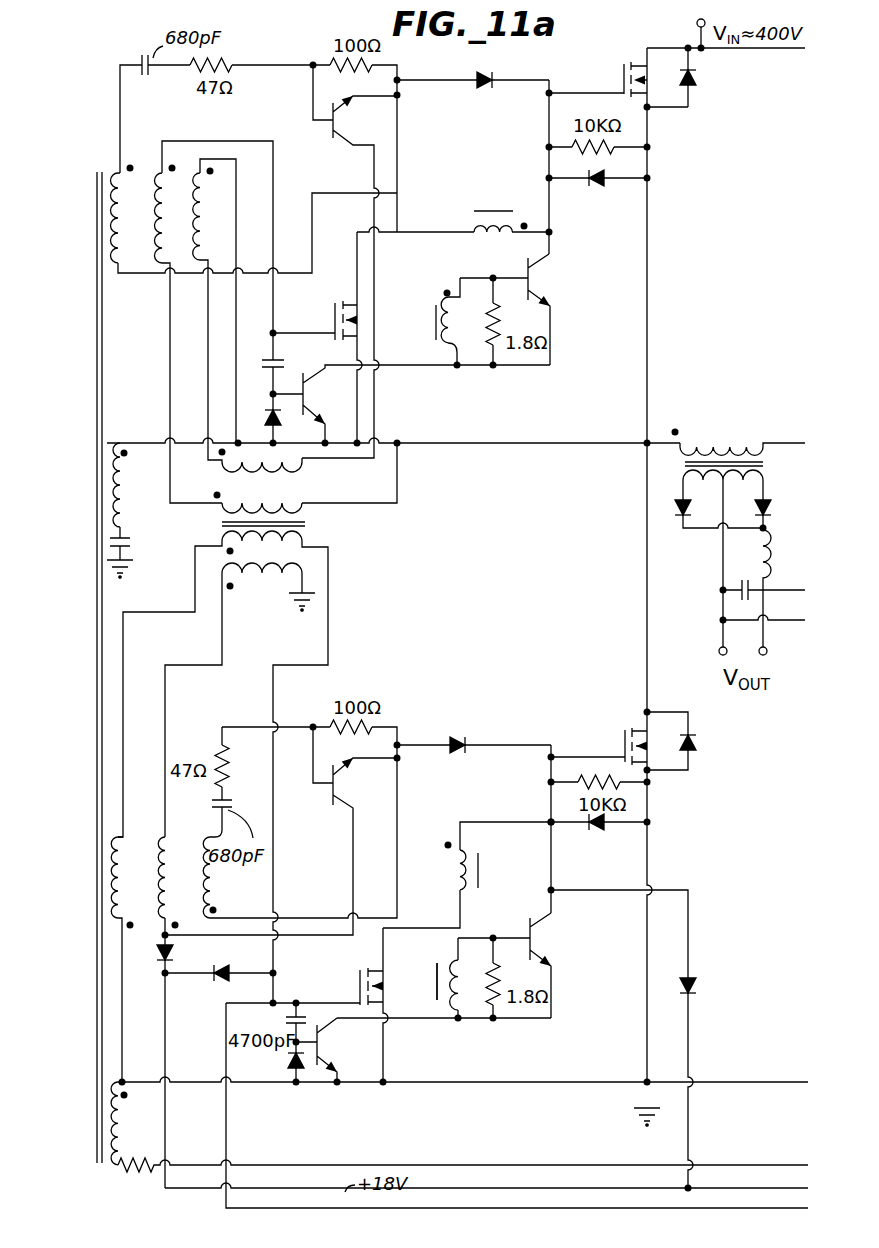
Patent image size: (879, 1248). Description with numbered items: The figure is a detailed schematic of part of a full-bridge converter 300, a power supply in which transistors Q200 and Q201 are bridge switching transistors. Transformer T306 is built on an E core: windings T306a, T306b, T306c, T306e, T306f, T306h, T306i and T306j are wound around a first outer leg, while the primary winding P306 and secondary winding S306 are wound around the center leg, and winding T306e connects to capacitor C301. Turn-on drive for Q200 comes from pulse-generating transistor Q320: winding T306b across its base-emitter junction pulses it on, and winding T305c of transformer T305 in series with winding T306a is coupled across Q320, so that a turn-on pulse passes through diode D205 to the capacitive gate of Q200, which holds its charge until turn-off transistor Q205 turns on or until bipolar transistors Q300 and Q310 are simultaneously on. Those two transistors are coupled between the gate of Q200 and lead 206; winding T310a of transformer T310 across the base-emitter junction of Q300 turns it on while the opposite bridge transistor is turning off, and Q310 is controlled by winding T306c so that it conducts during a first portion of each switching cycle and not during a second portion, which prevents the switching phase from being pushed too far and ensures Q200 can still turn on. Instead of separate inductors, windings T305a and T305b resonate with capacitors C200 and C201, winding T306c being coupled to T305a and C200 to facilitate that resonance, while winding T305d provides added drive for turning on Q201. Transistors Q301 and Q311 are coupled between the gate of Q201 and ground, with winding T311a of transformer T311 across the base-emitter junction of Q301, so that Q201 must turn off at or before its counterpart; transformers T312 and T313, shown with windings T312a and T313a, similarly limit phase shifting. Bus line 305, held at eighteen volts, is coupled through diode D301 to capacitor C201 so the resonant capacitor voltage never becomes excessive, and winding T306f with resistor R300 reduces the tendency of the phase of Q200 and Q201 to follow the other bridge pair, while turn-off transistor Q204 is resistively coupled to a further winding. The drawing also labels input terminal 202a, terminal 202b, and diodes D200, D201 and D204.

The transformer T306 is at (96, 655).
The winding T306a is at (197, 198).
The winding T306b is at (110, 172).
The winding T306c is at (154, 167).
The winding T306e is at (108, 480).
The winding T306f is at (107, 1122).
The winding T306h is at (107, 880).
The winding T306i is at (163, 856).
The winding T306j is at (200, 915).
The primary winding P306 is at (737, 447).
The secondary winding S306 is at (683, 476).
The pulse-generating transistor Q320 is at (345, 147).
The diode D205 is at (482, 73).
The transistor Q200 is at (636, 60).
The input terminal 202a is at (698, 22).
The diode D200 is at (694, 76).
The converter 300 is at (730, 132).
The transformer T312 is at (487, 212).
The winding T312a of transformer T312 T312a is at (474, 211).
The bipolar transistor Q300 is at (540, 284).
The transformer T310 is at (436, 318).
The winding T310a is at (472, 370).
The bipolar transistor Q310 is at (342, 388).
The turn-off transistor Q205 is at (350, 302).
The capacitor C200 is at (276, 352).
The lead 206 is at (517, 444).
The capacitor C301 is at (125, 560).
The transformer T305 is at (306, 524).
The winding T305a is at (290, 512).
The winding T305b is at (304, 541).
The winding T305c is at (303, 476).
The winding T305d is at (303, 573).
The diode D204 is at (458, 737).
The transistor Q201 is at (637, 726).
The diode D201 is at (697, 745).
The transformer T313 is at (483, 868).
The winding T313a of transformer T313 T313a is at (462, 870).
The transistor Q301 is at (538, 942).
The transformer T311 is at (437, 998).
The winding T311a is at (455, 990).
The turn-off transistor Q204 is at (370, 967).
The capacitor C201 is at (302, 1010).
The transistor Q311 is at (323, 1039).
The diode D301 is at (228, 987).
The terminal 202b is at (732, 1082).
The resistor R300 is at (128, 1180).
The bus line 305 is at (275, 1191).